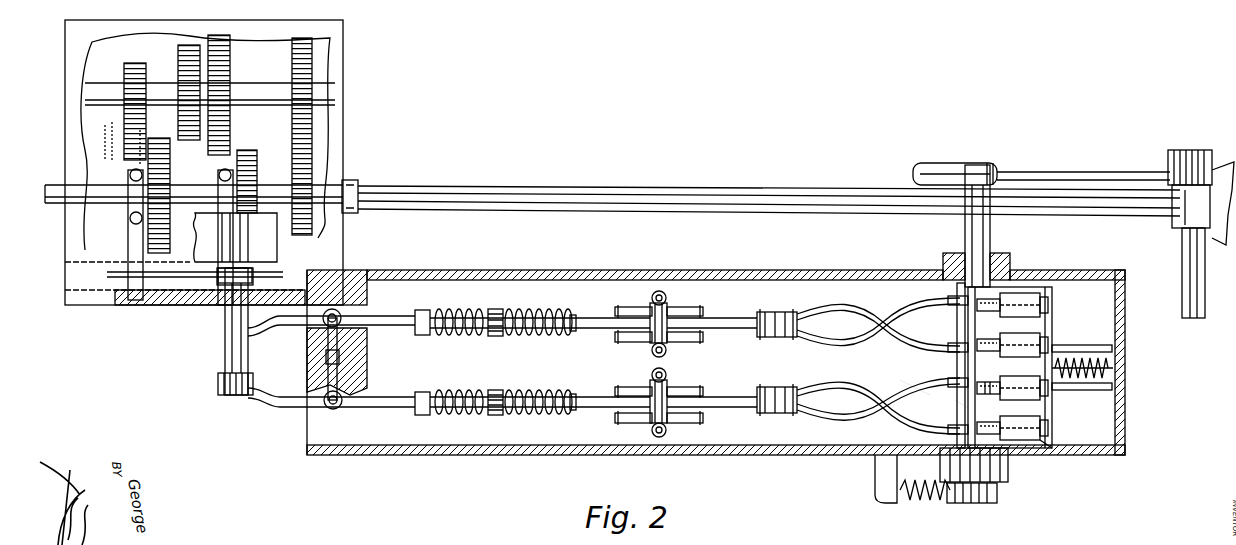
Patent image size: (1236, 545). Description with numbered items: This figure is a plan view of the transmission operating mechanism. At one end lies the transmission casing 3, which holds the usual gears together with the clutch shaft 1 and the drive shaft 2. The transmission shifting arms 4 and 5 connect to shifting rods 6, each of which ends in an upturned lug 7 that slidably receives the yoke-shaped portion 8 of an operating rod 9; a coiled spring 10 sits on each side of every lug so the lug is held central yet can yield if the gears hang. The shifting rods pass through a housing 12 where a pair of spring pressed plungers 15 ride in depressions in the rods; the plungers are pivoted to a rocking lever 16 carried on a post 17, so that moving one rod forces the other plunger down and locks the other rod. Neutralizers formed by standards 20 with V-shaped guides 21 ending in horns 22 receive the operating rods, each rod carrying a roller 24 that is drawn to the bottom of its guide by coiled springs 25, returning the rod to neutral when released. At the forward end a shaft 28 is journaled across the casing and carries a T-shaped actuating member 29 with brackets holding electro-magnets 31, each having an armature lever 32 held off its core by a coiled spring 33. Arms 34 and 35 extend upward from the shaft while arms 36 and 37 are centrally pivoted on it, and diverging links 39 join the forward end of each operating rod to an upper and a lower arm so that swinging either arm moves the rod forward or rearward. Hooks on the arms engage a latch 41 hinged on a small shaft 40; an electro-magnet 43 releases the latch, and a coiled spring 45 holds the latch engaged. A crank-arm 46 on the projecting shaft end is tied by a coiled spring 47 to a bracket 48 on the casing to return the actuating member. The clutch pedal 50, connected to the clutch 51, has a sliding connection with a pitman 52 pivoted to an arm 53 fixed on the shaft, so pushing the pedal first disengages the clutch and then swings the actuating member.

The clutch shaft 1 is at (688, 187).
The drive shaft 2 is at (60, 210).
The transmission casing 3 is at (343, 74).
The transmission shifting arm 4 is at (218, 390).
The transmission shifting arm 5 is at (218, 328).
The shifting rod 6 is at (372, 348).
The upturned lug 7 is at (495, 392).
The yoke-shaped portion 8 is at (576, 318).
The operating rod 9 is at (744, 318).
The coiled spring 10 is at (452, 313).
The housing 12 is at (370, 373).
The spring pressed plunger 15 is at (326, 407).
The rocking lever 16 is at (328, 348).
The post 17 is at (360, 326).
The standard 20 is at (615, 386).
The V-shaped guide 21 is at (642, 346).
The horn 22 is at (712, 303).
The roller 24 is at (670, 395).
The coiled spring 25 is at (666, 350).
The shaft 28 is at (992, 231).
The T-shaped actuating member 29 is at (957, 365).
The electro-magnet 31 is at (1050, 297).
The armature lever 32 is at (962, 405).
The coiled spring 33 is at (998, 369).
The arm 34 is at (935, 441).
The arm 35 is at (925, 291).
The arm 36 is at (900, 388).
The arm 37 is at (950, 322).
The link 39 is at (928, 388).
The small shaft 40 is at (1046, 443).
The latch 41 is at (1032, 372).
The electro-magnet 43 is at (1090, 345).
The coiled spring 45 is at (1095, 391).
The crank-arm 46 is at (978, 505).
The coiled spring 47 is at (928, 505).
The bracket 48 is at (876, 485).
The clutch pedal 50 is at (1195, 152).
The clutch 51 is at (1221, 250).
The pitman 52 is at (1140, 170).
The arm 53 is at (946, 164).